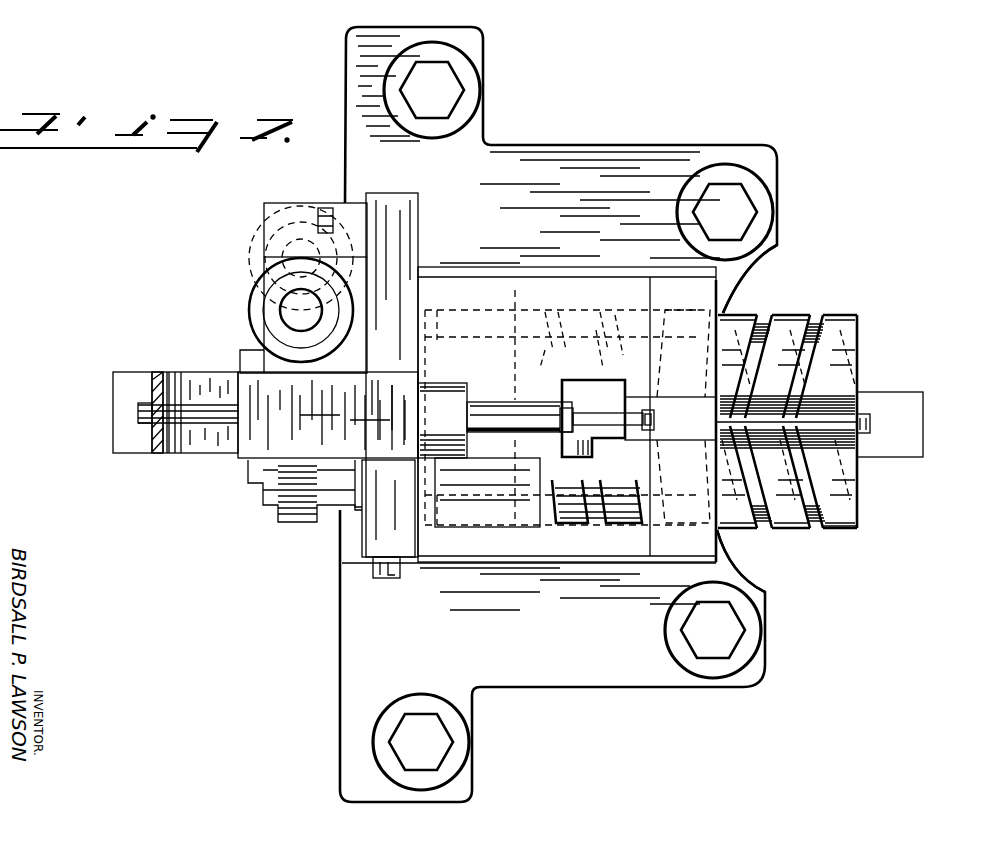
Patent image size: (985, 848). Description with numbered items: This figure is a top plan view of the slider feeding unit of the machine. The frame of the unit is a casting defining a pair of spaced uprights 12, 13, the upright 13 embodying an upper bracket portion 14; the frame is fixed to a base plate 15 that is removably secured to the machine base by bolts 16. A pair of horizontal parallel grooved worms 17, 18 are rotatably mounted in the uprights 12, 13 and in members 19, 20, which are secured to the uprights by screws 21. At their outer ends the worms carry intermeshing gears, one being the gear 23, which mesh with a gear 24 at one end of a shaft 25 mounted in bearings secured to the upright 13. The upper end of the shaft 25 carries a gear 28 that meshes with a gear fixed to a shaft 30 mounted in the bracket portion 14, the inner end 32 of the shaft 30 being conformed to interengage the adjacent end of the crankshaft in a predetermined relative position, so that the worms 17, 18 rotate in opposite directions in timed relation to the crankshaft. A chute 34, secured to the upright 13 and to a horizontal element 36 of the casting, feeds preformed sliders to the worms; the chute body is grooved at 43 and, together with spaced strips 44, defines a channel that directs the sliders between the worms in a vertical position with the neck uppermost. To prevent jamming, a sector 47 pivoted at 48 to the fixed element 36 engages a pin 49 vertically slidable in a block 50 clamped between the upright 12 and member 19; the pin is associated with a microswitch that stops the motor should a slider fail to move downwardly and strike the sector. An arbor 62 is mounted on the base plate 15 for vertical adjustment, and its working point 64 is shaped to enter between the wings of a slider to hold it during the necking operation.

The upright 12 is at (702, 295).
The upright 13 is at (385, 200).
The upper bracket portion 14 is at (252, 438).
The base plate 15 is at (348, 603).
The bolts 16 is at (713, 192).
The worm 17 is at (795, 330).
The worm 18 is at (840, 530).
The member 19 is at (700, 548).
The member 20 is at (373, 540).
The screws 21 is at (392, 580).
The gear 23 is at (310, 522).
The gear 24 is at (258, 248).
The shaft 25 is at (300, 318).
The gear 28 is at (252, 300).
The shaft 30 is at (483, 410).
The inner end of shaft 32 is at (555, 437).
The chute 34 is at (120, 398).
The horizontal element 36 is at (492, 297).
The groove 43 is at (148, 424).
The strips 44 is at (163, 378).
The sector 47 is at (605, 405).
The pivot 48 is at (596, 480).
The pin 49 is at (658, 418).
The block 50 is at (688, 442).
The arbor 62 is at (872, 425).
The working point 64 is at (866, 437).